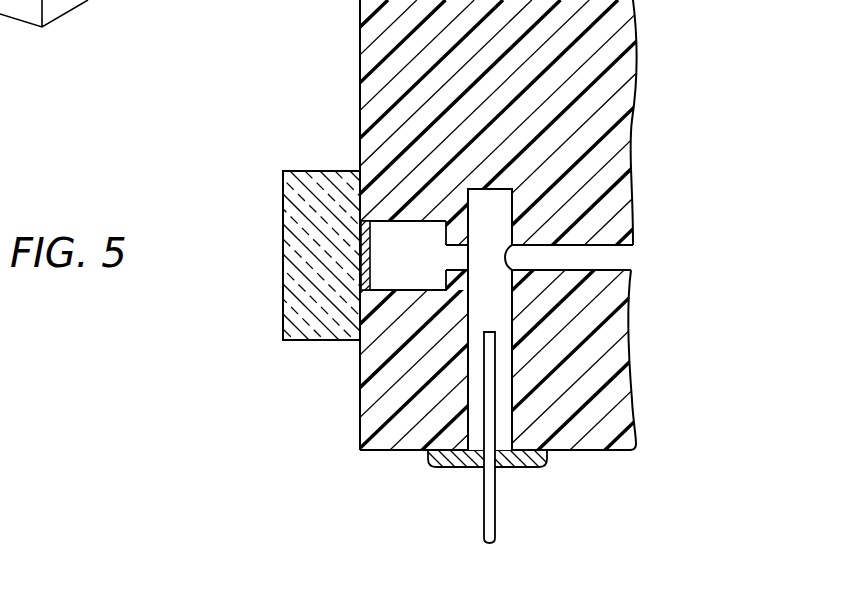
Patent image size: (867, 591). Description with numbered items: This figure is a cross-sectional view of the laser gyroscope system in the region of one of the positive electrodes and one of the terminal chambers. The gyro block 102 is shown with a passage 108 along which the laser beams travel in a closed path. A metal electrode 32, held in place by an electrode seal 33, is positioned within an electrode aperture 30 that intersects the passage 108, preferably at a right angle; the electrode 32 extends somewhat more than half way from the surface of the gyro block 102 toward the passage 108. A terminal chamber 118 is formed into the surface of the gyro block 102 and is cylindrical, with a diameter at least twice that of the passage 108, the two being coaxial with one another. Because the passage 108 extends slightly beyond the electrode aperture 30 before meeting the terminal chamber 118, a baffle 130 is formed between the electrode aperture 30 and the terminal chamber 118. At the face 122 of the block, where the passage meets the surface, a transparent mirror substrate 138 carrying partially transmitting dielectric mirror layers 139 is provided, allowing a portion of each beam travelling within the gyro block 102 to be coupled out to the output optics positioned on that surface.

The electrode aperture 30 is at (503, 378).
The metal electrode 32 is at (496, 488).
The electrode seal 33 is at (448, 466).
The gyro block 102 is at (621, 35).
The passage 108 is at (615, 260).
The terminal chamber 118 is at (407, 221).
The face 122 is at (358, 428).
The baffle 130 is at (458, 234).
The transparent mirror substrate 138 is at (305, 265).
The partially transmitting dielectric mirror layers 139 is at (370, 254).